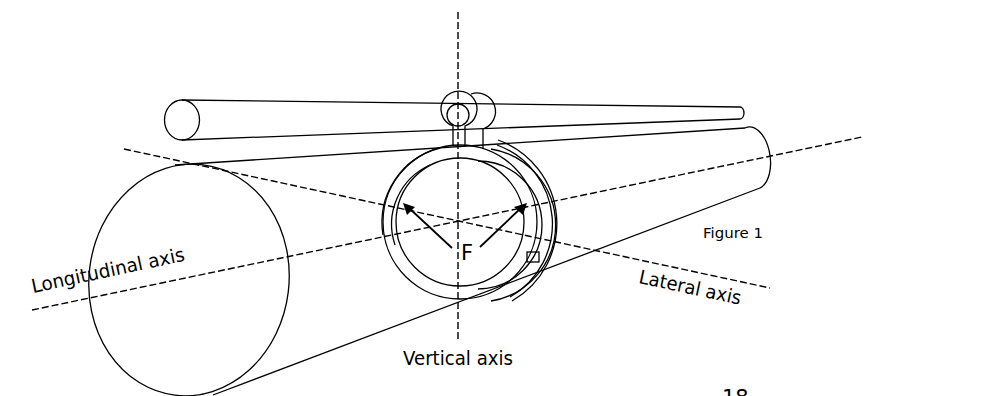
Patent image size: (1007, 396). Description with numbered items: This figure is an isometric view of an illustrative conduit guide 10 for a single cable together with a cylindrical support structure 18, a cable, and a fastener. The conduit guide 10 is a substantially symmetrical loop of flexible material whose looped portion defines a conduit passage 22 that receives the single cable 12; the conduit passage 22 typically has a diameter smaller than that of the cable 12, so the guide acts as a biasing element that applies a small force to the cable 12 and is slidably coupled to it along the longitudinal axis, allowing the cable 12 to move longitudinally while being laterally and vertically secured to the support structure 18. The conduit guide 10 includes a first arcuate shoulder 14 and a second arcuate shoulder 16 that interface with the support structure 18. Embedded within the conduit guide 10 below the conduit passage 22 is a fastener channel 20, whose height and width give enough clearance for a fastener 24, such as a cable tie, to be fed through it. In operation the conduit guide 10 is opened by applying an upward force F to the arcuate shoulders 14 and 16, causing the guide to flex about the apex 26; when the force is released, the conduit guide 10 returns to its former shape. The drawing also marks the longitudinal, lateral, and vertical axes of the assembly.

The conduit guide 10 is at (485, 110).
The single cable 12 is at (642, 105).
The first arcuate shoulder 14 is at (538, 163).
The second arcuate shoulder 16 is at (425, 142).
The support structure 18 is at (608, 137).
The fastener channel 20 is at (492, 133).
The conduit passage 22 is at (468, 103).
The fastener 24 is at (535, 278).
The apex 26 is at (458, 92).